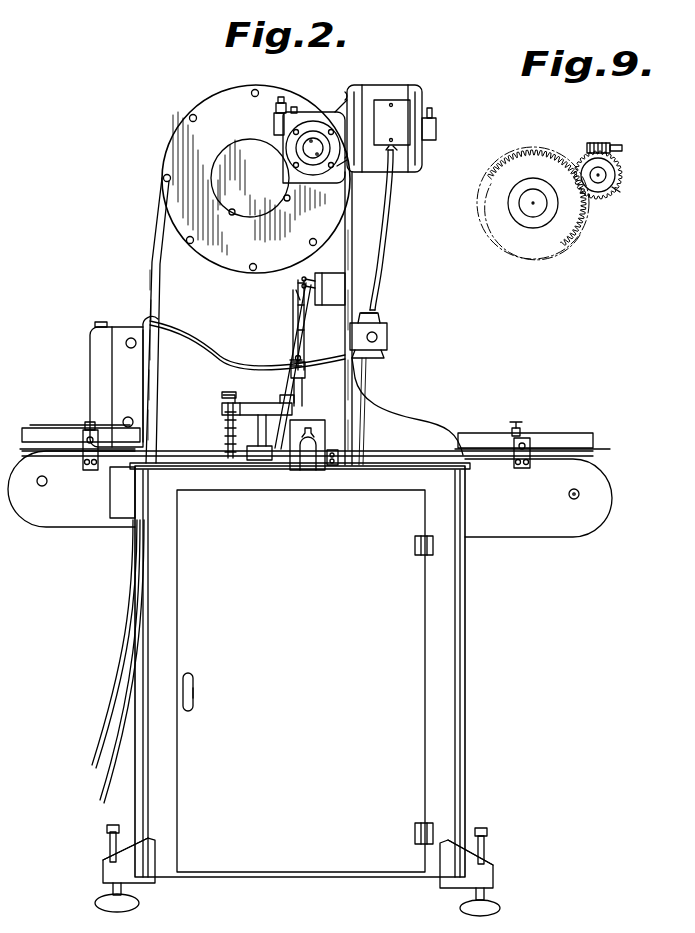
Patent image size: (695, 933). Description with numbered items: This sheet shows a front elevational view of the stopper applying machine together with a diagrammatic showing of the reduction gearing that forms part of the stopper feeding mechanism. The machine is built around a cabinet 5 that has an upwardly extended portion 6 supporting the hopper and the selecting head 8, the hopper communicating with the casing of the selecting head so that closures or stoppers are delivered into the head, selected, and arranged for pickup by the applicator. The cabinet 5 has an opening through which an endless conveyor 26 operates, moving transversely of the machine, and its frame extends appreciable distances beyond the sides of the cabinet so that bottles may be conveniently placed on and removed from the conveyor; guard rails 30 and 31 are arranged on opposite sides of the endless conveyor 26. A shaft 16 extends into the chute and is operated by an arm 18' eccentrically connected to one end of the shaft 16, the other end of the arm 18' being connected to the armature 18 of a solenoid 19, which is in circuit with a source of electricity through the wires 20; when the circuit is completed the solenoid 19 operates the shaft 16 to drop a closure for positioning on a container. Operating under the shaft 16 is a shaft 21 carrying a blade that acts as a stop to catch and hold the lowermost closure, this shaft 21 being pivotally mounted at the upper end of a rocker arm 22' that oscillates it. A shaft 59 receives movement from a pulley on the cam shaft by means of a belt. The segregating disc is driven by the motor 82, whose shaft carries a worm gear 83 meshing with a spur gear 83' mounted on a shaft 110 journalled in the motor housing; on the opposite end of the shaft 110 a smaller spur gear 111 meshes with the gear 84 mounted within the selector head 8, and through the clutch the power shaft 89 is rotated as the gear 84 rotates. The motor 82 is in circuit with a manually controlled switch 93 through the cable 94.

In FIG. 2, the cabinet 5 is at (475, 695).
In FIG. 2, the upwardly extended portion 6 is at (153, 276).
In FIG. 2, the selecting head 8 is at (175, 122).
In FIG. 2, the shaft 16 is at (292, 348).
In FIG. 2, the armature 18 is at (315, 325).
In FIG. 2, the arm 18' is at (273, 358).
In FIG. 2, the solenoid 19 is at (303, 283).
In FIG. 2, the wires 20 is at (300, 308).
In FIG. 2, the shaft 21 is at (306, 376).
In FIG. 2, the rocker arm 22' is at (284, 426).
In FIG. 2, the endless conveyor 26 is at (610, 494).
In FIG. 2, the guard rail 30 is at (568, 433).
In FIG. 2, the guard rail 31 is at (593, 453).
In FIG. 2, the shaft 59 is at (569, 496).
In FIG. 2, the motor 82 is at (385, 88).
In FIG. 2, the switch 93 is at (388, 340).
In FIG. 2, the cable 94 is at (383, 240).
In FIG. 9, the worm gear 83 is at (604, 132).
In FIG. 9, the spur gear 83' is at (620, 174).
In FIG. 9, the gear 84 is at (543, 153).
In FIG. 9, the power shaft 89 is at (542, 215).
In FIG. 9, the shaft 110 is at (592, 174).
In FIG. 9, the smaller spur gear 111 is at (620, 192).